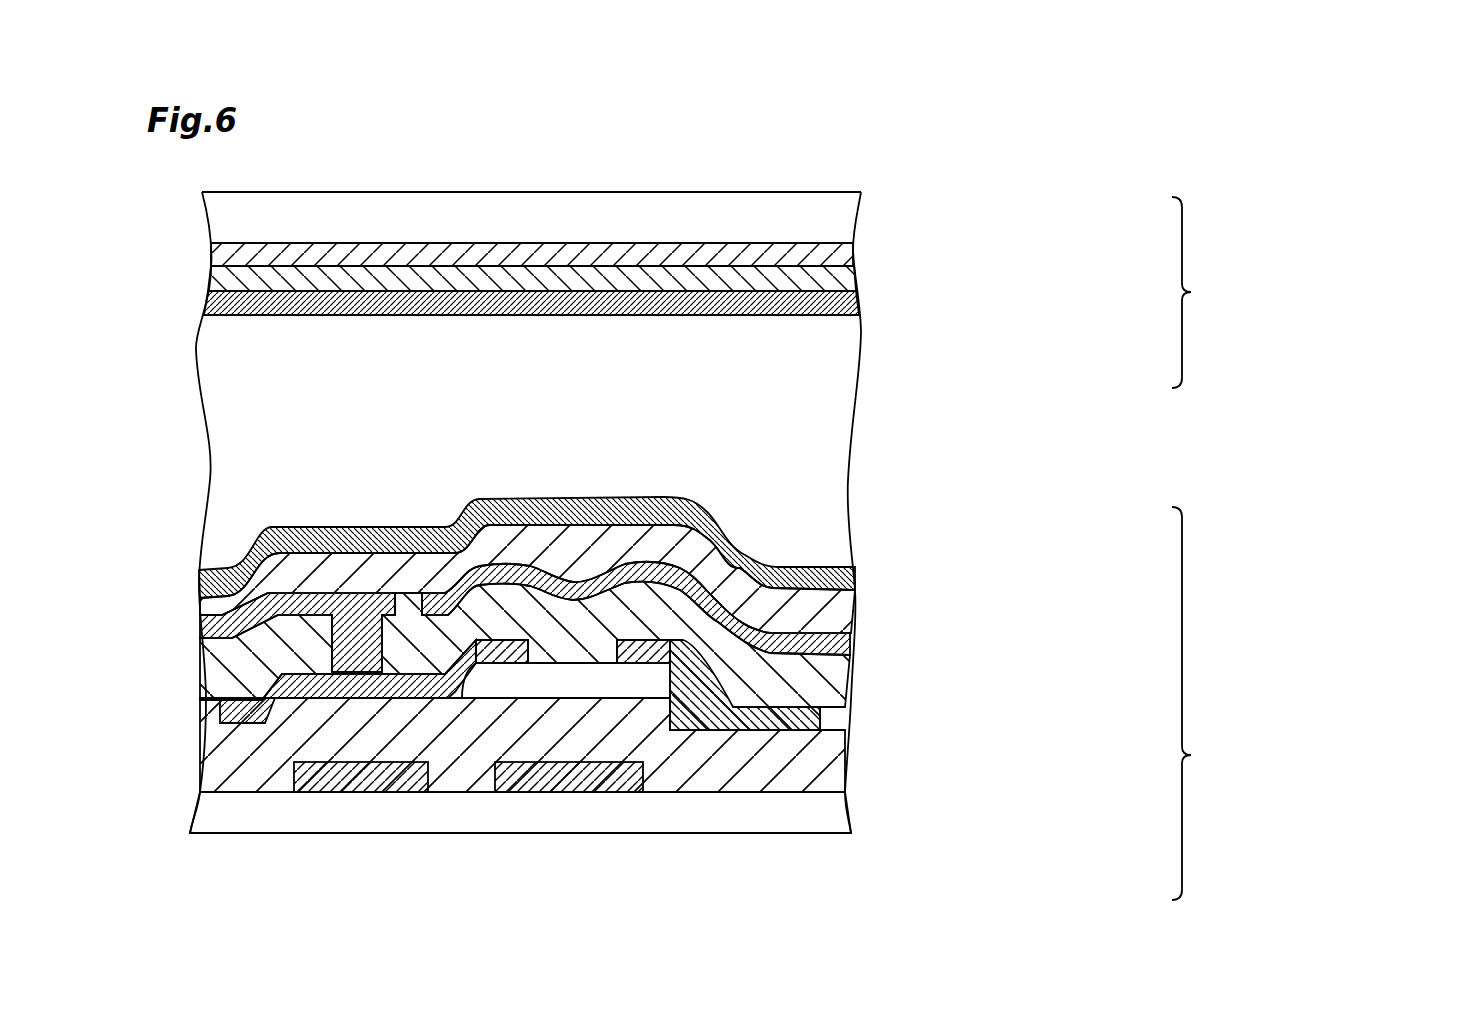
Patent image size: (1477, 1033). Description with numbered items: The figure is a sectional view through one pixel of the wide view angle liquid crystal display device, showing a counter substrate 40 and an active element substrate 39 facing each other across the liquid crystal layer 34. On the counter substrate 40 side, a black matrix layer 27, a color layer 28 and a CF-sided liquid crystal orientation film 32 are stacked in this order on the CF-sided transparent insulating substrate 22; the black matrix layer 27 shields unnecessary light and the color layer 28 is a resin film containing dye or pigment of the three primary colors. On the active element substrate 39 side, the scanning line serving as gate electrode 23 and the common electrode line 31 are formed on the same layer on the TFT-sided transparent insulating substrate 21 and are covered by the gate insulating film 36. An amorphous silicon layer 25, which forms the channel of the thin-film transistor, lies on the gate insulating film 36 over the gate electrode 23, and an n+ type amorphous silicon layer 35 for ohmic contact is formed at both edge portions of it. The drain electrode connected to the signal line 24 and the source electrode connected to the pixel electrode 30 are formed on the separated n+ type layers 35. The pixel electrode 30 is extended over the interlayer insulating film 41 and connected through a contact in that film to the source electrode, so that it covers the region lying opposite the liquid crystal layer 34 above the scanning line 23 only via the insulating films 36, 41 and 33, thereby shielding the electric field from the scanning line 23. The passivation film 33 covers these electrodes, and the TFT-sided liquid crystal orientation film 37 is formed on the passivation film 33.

The TFT-sided transparent insulating substrate 21 is at (793, 825).
The CF-sided transparent insulating substrate 22 is at (597, 212).
The scanning line (gate electrode) 23 is at (530, 798).
The signal line (drain electrode) 24 is at (820, 725).
The amorphous silicon layer 25 is at (670, 645).
The black matrix layer 27 is at (842, 257).
The color layer 28 is at (843, 278).
The pixel electrode (source electrode) 30 is at (215, 628).
The common electrode line 31 is at (300, 798).
The CF-sided liquid crystal orientation film 32 is at (846, 305).
The passivation film 33 is at (850, 627).
The liquid crystal layer 34 is at (829, 477).
The n+ type amorphous silicon layer 35 is at (508, 660).
The gate insulating film 36 is at (815, 795).
The TFT-sided liquid crystal orientation film 37 is at (851, 578).
The active element substrate 39 is at (1301, 703).
The counter substrate 40 is at (1324, 292).
The interlayer insulating film 41 is at (826, 695).